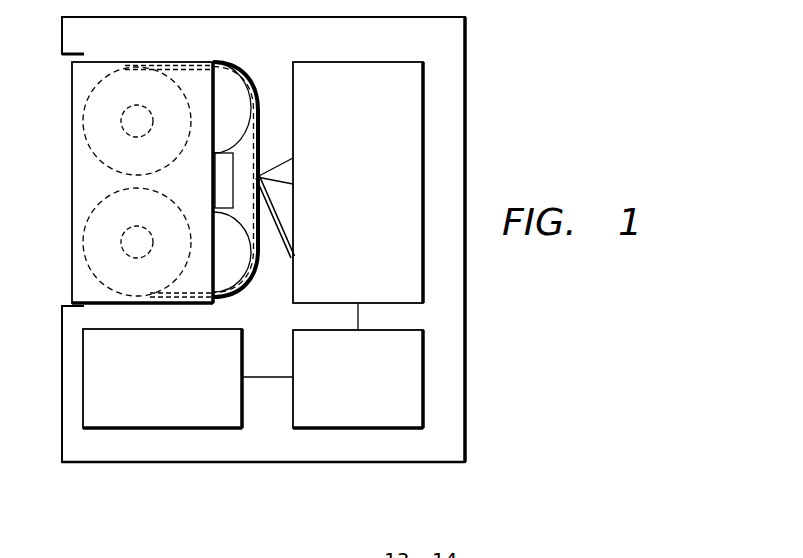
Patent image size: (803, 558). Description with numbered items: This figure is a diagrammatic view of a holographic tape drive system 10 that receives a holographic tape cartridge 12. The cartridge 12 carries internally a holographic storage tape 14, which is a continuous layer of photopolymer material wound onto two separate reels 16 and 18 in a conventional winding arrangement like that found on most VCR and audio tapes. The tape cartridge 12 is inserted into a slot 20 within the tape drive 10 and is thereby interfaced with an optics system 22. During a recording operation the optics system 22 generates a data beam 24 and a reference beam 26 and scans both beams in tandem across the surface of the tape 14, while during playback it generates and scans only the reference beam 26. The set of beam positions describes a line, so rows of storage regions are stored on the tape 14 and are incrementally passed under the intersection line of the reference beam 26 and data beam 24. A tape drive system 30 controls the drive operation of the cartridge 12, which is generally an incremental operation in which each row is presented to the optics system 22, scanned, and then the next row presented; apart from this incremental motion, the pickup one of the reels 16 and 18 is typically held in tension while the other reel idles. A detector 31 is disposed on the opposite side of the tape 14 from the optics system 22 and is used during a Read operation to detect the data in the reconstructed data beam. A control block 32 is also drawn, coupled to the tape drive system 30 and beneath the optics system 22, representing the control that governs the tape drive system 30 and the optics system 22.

The tape drive system 10 is at (467, 124).
The holographic tape cartridge 12 is at (72, 199).
The holographic storage tape 14 is at (232, 70).
The reel 16 is at (137, 116).
The reel 18 is at (133, 241).
The slot 20 is at (63, 58).
The optics system 22 is at (371, 218).
The data beam 24 is at (280, 169).
The reference beam 26 is at (282, 247).
The tape drive system 30 is at (150, 417).
The detector 31 is at (225, 163).
The control 32 is at (372, 406).